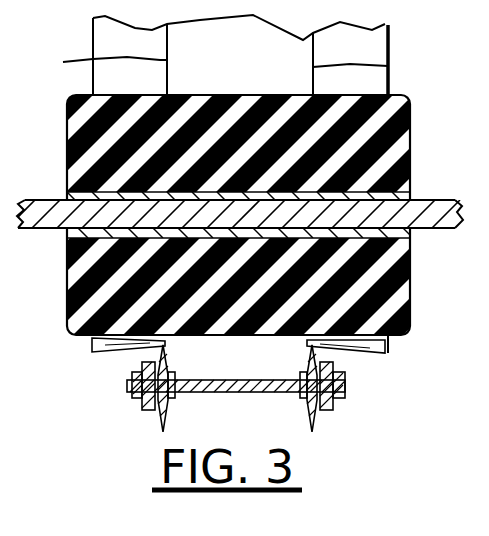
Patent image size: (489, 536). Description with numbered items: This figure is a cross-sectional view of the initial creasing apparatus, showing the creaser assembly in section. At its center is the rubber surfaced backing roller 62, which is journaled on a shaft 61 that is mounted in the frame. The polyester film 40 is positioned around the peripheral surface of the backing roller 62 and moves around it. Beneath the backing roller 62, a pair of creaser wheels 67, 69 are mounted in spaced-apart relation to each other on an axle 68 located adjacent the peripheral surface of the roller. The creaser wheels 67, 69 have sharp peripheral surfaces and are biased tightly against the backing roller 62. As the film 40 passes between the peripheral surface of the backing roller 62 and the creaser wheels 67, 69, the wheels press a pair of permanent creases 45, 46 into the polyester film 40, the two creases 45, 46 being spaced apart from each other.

The polyester film 40 is at (276, 55).
The permanent crease 45 is at (355, 215).
The permanent crease 46 is at (124, 211).
The shaft 61 is at (430, 230).
The backing roller 62 is at (244, 215).
The creaser wheel 67 is at (317, 417).
The axle 68 is at (262, 393).
The creaser wheel 69 is at (160, 413).